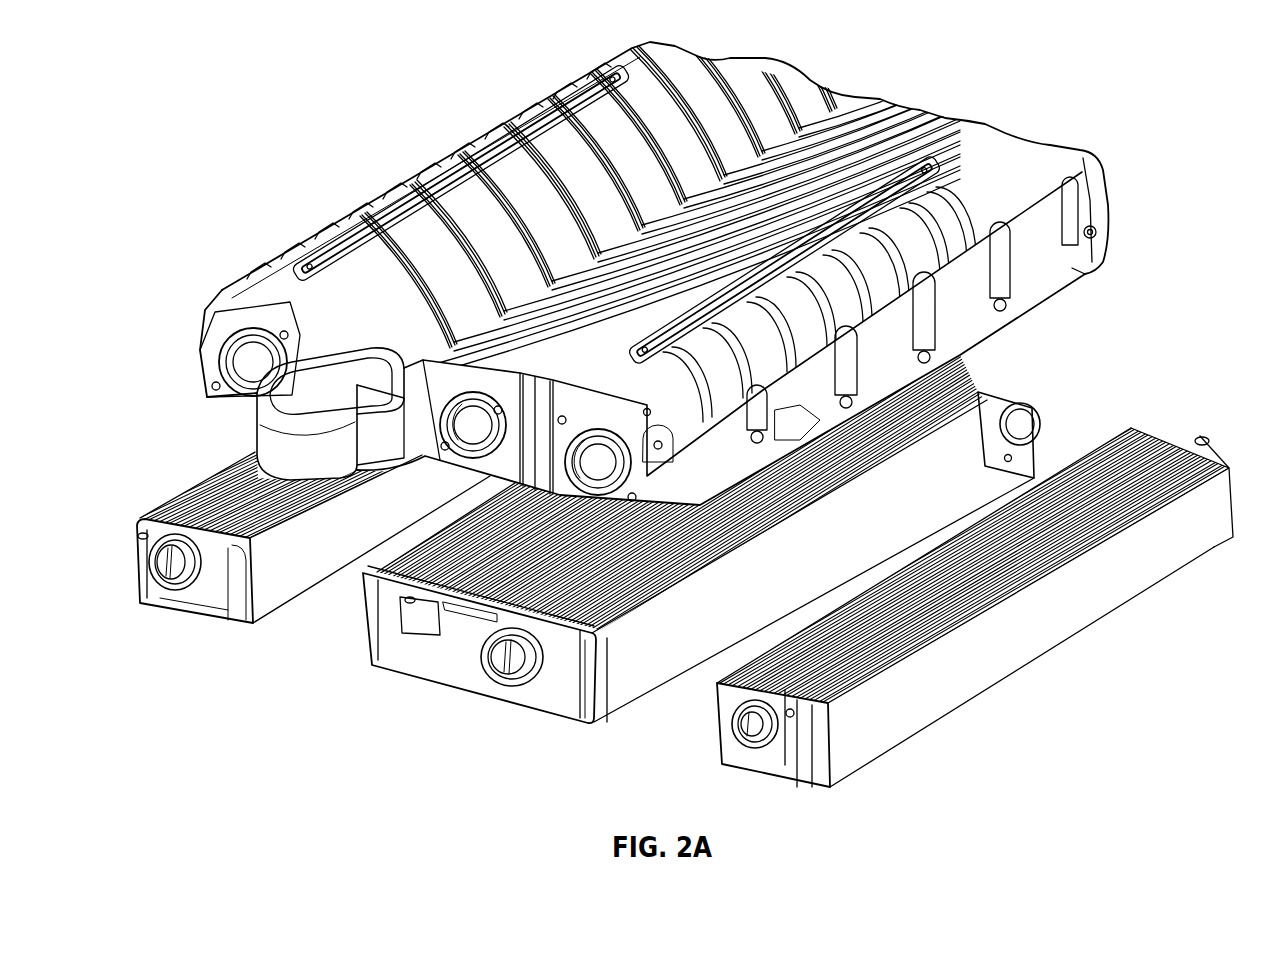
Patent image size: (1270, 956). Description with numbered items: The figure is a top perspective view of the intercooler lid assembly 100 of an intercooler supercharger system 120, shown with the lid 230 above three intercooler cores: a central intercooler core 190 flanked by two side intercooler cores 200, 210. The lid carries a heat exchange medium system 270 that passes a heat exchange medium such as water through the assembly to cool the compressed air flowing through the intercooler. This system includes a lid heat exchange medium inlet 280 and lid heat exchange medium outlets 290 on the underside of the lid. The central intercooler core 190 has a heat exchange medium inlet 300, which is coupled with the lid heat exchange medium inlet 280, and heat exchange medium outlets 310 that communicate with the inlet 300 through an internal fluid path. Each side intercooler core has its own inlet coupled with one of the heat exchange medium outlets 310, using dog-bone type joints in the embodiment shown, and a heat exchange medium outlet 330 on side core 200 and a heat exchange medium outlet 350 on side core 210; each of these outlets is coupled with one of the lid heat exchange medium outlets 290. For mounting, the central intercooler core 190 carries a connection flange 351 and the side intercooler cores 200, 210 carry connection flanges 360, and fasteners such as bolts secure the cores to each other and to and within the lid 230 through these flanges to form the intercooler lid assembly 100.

The intercooler lid assembly 100 is at (376, 122).
The intercooler supercharger system 120 is at (1051, 678).
The central intercooler core 190 is at (597, 725).
The side intercooler core 200 is at (207, 620).
The side intercooler core 210 is at (1146, 613).
The lid 230 is at (562, 82).
The heat exchange medium system 270 is at (208, 388).
The lid heat exchange medium inlet 280 is at (450, 453).
The lid heat exchange medium outlets 290 is at (247, 387).
The heat exchange medium inlet 300 is at (493, 673).
The heat exchange medium outlets 310 is at (1048, 419).
The heat exchange medium outlet 330 is at (157, 578).
The heat exchange medium outlet 350 is at (742, 750).
The connection flange 351 is at (410, 633).
The connection flange 360 is at (133, 543).